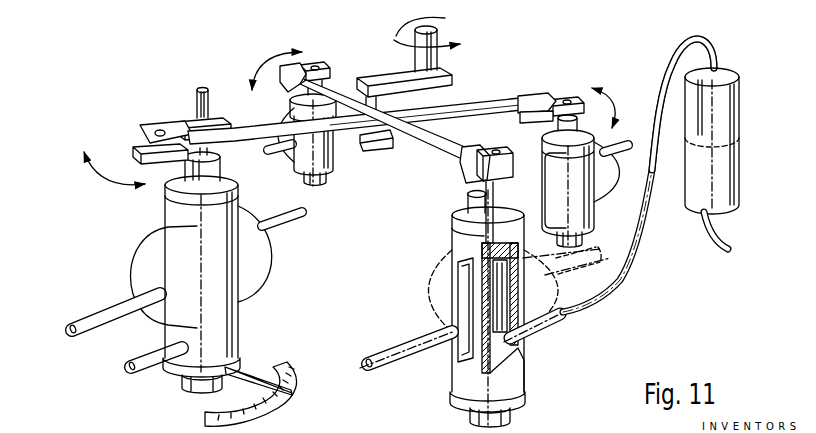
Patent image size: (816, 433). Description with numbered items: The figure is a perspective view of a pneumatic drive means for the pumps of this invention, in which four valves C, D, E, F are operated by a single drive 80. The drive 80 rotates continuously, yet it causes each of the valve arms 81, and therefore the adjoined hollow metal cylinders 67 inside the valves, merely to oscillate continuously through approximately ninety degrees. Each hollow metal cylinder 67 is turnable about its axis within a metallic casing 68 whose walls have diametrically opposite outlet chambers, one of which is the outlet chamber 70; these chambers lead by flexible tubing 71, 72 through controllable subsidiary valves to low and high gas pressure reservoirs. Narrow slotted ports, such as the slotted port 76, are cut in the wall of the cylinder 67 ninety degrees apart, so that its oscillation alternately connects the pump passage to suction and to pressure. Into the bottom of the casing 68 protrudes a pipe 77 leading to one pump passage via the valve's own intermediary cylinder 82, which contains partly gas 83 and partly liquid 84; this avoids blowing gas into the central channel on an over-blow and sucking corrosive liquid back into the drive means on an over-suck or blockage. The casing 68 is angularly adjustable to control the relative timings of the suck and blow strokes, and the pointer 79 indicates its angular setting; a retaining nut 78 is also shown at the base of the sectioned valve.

The hollow metal cylinder 67 is at (588, 306).
The metallic casing 68 is at (437, 305).
The outlet chamber 70 is at (468, 351).
The flexible tubing 71 is at (598, 268).
The flexible tubing 72 is at (383, 350).
The slotted port 76 is at (503, 340).
The pipe 77 is at (545, 347).
The retaining nut 78 is at (516, 365).
The pointer 79 is at (251, 370).
The single drive 80 is at (452, 75).
The valve arm 81 is at (428, 150).
The intermediary cylinder 82 is at (680, 100).
The gas 83 is at (688, 131).
The liquid 84 is at (697, 208).
The valve C is at (508, 289).
The valve D is at (188, 357).
The valve E is at (336, 176).
The valve F is at (597, 212).